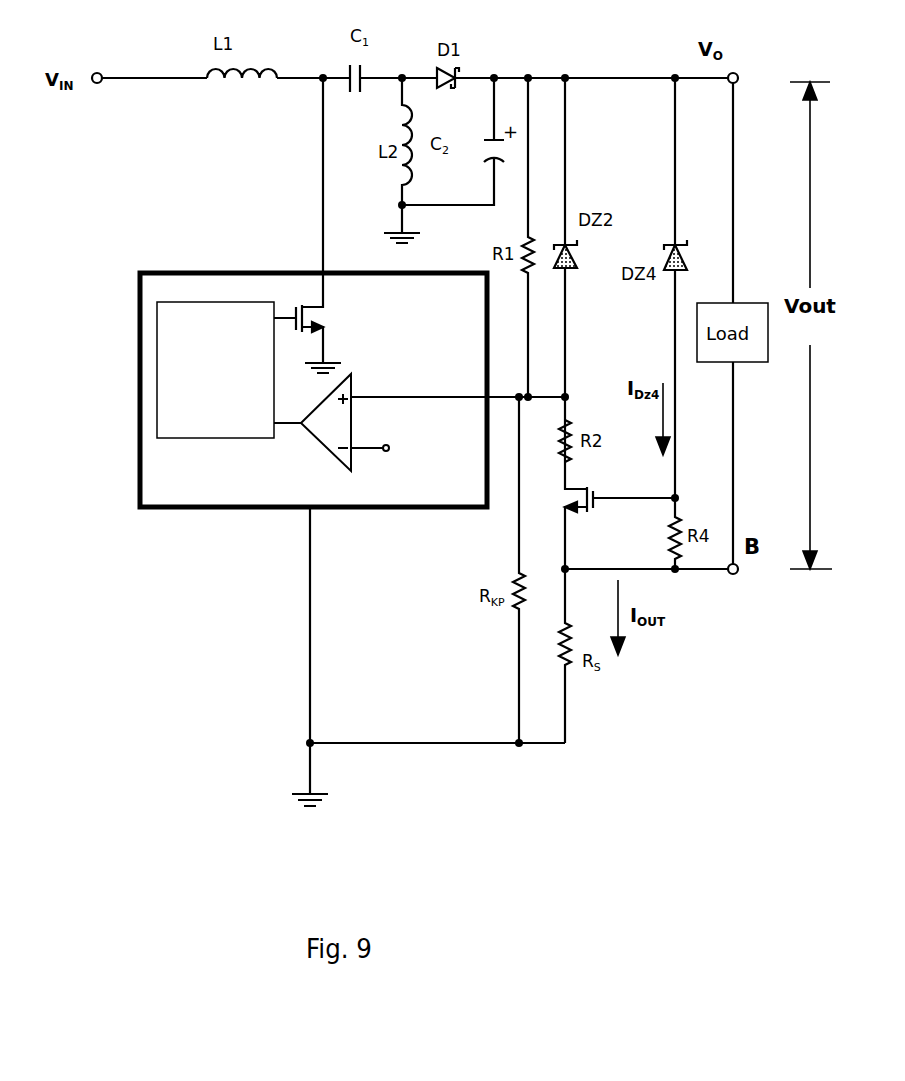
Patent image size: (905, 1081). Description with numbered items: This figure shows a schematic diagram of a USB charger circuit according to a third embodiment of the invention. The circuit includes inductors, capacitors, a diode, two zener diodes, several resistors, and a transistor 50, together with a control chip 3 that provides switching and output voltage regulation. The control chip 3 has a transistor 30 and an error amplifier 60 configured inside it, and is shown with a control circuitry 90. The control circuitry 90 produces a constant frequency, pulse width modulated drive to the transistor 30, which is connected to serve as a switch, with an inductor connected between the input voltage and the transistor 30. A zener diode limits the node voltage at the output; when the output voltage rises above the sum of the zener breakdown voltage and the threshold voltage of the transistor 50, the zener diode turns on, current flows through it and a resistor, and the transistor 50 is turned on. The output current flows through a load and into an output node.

The control chip 3 is at (227, 483).
The transistor 30 is at (309, 303).
The transistor 50 is at (560, 495).
The error amplifier 60 is at (352, 462).
The control circuitry 90 is at (158, 298).